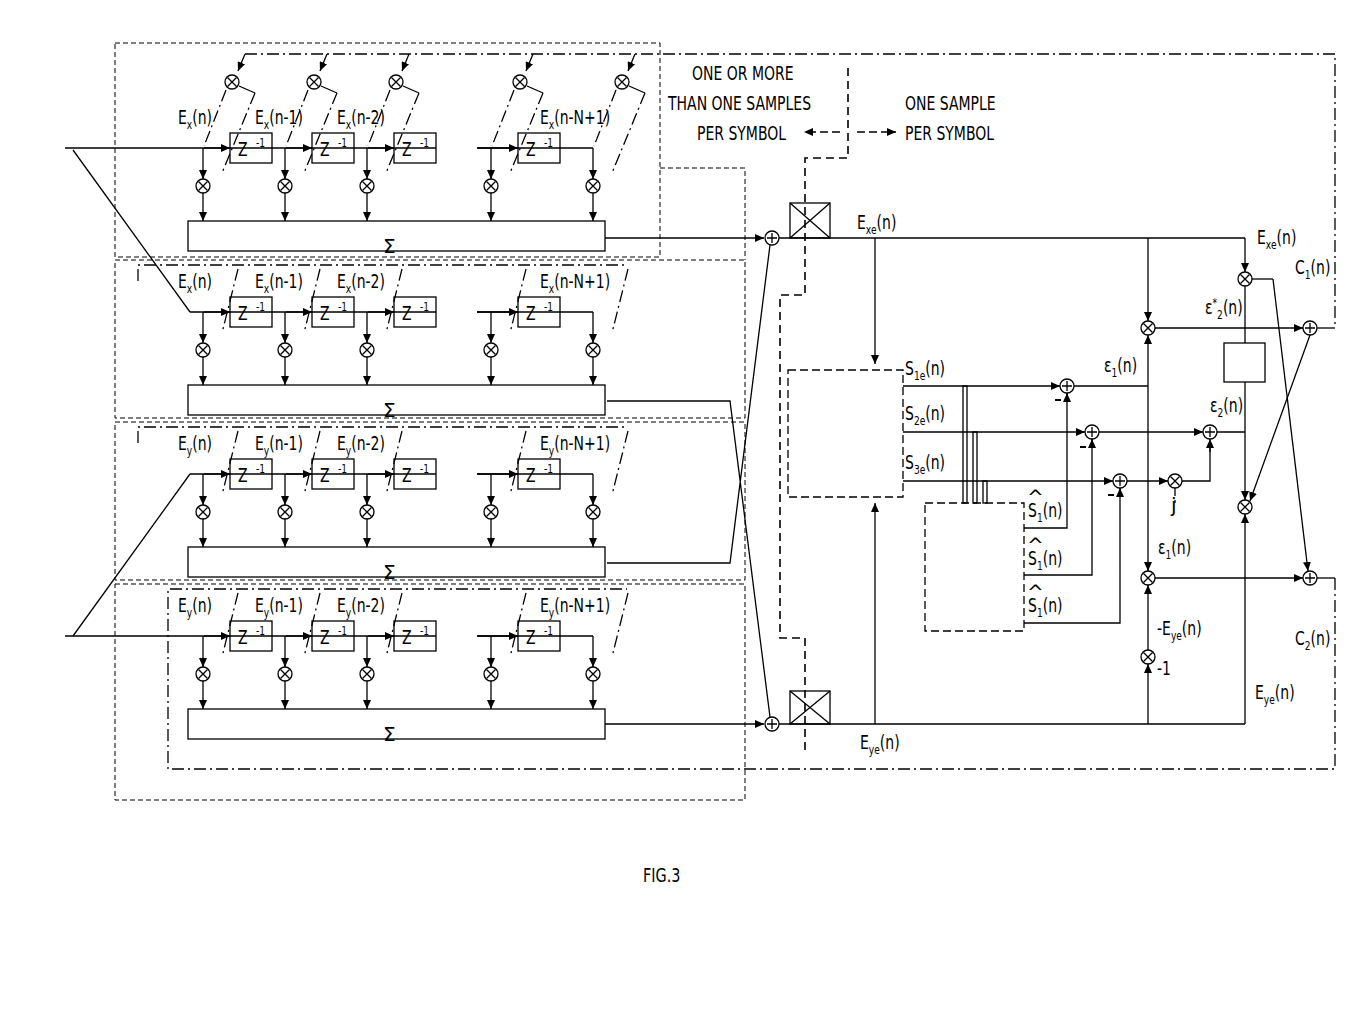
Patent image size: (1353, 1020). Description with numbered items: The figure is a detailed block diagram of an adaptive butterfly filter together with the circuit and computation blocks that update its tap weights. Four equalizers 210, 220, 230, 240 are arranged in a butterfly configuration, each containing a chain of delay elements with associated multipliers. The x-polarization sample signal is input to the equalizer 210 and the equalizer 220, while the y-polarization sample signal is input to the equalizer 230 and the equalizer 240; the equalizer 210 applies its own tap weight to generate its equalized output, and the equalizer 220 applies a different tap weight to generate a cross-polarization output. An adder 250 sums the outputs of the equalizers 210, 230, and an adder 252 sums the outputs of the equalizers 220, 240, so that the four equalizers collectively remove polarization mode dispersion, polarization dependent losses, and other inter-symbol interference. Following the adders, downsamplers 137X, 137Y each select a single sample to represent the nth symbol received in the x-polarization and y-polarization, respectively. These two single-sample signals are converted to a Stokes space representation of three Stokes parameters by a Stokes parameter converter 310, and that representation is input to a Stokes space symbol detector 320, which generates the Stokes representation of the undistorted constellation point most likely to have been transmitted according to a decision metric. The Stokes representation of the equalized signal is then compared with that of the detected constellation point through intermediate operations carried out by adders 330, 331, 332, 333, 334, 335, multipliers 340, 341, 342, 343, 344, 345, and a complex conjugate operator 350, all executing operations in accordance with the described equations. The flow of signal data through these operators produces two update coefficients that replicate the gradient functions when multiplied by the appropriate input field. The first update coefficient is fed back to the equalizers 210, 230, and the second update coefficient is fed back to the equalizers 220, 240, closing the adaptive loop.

The equalizer 210 is at (115, 75).
The equalizer 220 is at (115, 305).
The equalizer 230 is at (115, 473).
The equalizer 240 is at (115, 743).
The adder 250 is at (771, 230).
The adder 252 is at (770, 732).
The downsampler 137X is at (830, 212).
The downsampler 137Y is at (830, 700).
The Stokes parameter converter 310 is at (826, 370).
The Stokes space symbol detector 320 is at (945, 631).
The adder 330 is at (1062, 380).
The adder 331 is at (1099, 426).
The adder 332 is at (1117, 473).
The adder 333 is at (1203, 426).
The adder 334 is at (1316, 336).
The adder 335 is at (1303, 577).
The multiplier 340 is at (1182, 487).
The multiplier 341 is at (1140, 659).
The multiplier 342 is at (1156, 584).
The multiplier 343 is at (1141, 327).
The multiplier 344 is at (1238, 514).
The multiplier 345 is at (1238, 279).
The complex conjugate operator 350 is at (1224, 352).